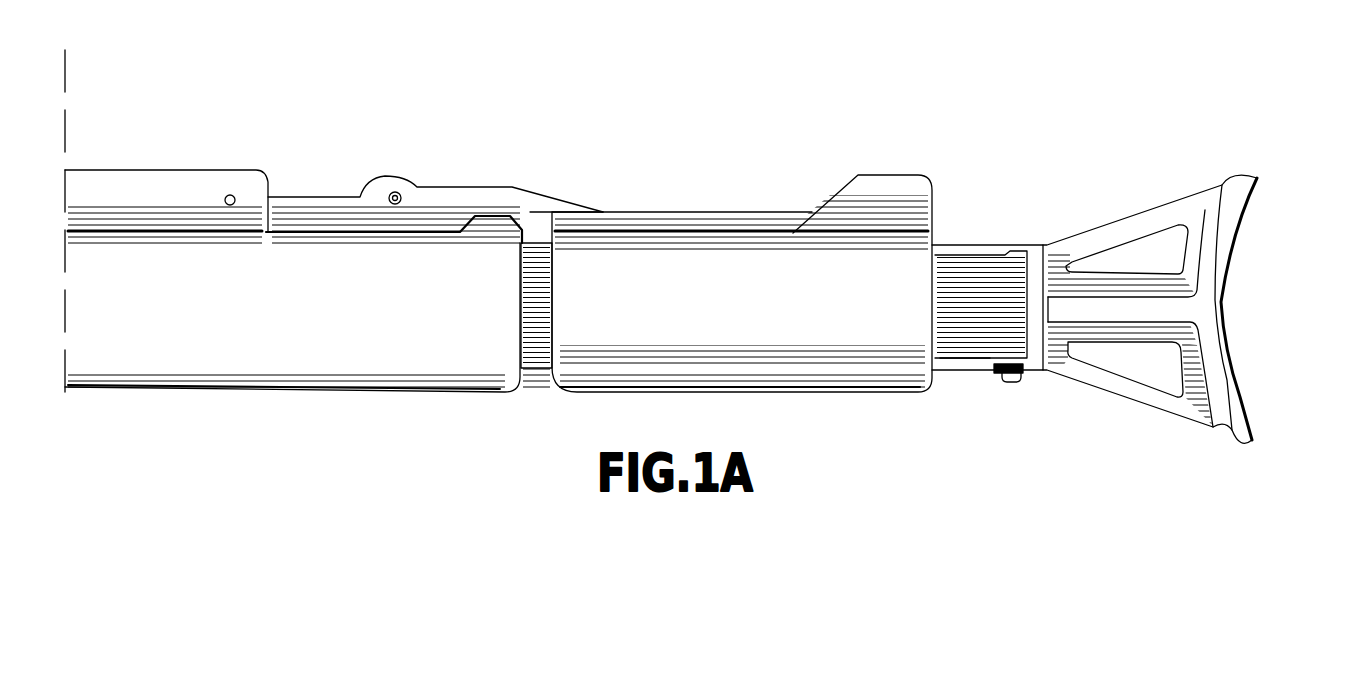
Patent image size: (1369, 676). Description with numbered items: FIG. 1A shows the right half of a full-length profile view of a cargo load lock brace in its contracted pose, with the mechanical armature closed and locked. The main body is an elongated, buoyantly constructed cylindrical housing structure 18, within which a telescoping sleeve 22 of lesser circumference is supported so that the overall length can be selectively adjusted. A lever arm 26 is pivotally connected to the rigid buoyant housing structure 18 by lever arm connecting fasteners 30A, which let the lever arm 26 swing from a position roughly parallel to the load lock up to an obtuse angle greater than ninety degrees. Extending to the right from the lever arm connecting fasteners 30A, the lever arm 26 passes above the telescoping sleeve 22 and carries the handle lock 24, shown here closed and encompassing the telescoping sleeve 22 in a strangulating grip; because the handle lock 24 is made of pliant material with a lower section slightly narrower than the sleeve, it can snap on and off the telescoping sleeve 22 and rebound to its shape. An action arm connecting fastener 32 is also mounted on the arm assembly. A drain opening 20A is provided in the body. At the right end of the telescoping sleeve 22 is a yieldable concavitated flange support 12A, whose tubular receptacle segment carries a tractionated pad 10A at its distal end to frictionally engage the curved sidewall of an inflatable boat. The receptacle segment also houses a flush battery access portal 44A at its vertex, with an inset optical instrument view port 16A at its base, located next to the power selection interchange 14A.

The tractionated pad 10A is at (1137, 317).
The concavitated flange support 12A is at (1068, 310).
The power selection interchange 14A is at (1018, 382).
The optical instrument view port 16A is at (958, 360).
The buoyant housing structure 18 is at (118, 190).
The drain opening 20A is at (742, 323).
The telescoping sleeve 22 is at (543, 243).
The handle lock 24 is at (648, 247).
The lever arm 26 is at (310, 213).
The lever arm connecting fastener 30A is at (234, 196).
The action arm connecting fastener 32 is at (398, 192).
The battery access portal 44A is at (985, 248).